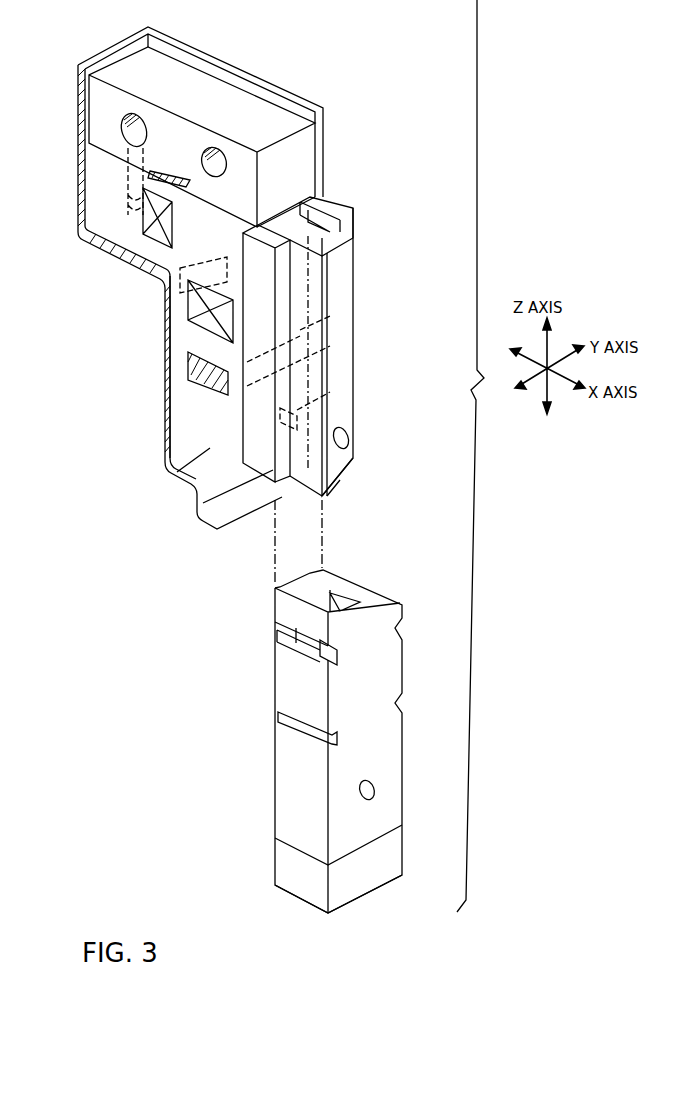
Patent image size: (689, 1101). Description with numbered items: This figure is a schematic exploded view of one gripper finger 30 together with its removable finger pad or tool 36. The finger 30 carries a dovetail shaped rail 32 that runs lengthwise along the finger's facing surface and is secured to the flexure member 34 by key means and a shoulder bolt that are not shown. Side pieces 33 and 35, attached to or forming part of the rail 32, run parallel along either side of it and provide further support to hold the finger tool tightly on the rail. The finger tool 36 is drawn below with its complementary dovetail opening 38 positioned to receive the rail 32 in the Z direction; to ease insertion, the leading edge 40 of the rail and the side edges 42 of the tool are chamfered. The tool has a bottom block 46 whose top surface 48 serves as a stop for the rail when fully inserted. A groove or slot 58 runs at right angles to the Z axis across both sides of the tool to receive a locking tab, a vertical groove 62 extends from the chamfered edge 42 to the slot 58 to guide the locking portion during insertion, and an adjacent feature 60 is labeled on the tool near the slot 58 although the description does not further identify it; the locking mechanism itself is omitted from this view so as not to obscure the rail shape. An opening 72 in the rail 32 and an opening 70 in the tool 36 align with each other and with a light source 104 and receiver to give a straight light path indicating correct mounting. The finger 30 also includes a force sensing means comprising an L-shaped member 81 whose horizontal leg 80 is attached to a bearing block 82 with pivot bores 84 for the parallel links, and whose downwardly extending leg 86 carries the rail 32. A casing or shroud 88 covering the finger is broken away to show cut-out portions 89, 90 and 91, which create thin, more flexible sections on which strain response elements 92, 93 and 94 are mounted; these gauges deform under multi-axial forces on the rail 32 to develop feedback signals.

The finger 30 is at (341, 111).
The dovetail shaped rail 32 is at (320, 339).
The side piece 33 is at (272, 262).
The flexure member 34 is at (166, 349).
The side piece 35 is at (356, 228).
The finger pad or tool 36 is at (342, 730).
The dovetail opening 38 is at (268, 561).
The leading edge 40 is at (335, 482).
The side edges 42 is at (295, 617).
The bottom block 46 is at (402, 857).
The top surface 48 is at (383, 810).
The groove or slot 58 is at (337, 656).
The groove 60 is at (293, 645).
The groove 62 is at (320, 651).
The opening 70 is at (373, 783).
The opening 72 is at (347, 432).
The horizontal leg 80 is at (205, 278).
The L-shaped member 81 is at (106, 262).
The bearing block 82 is at (165, 62).
The pivot bores 84 is at (134, 116).
The downwardly extending leg 86 is at (190, 392).
The casing or shroud 88 is at (77, 178).
The cut-out portion 89 is at (170, 222).
The cut-out portion 90 is at (228, 322).
The cut-out portion 91 is at (265, 351).
The strain response element 92 is at (180, 174).
The strain response element 93 is at (181, 270).
The strain response element 94 is at (231, 405).
The light source 104 is at (297, 410).